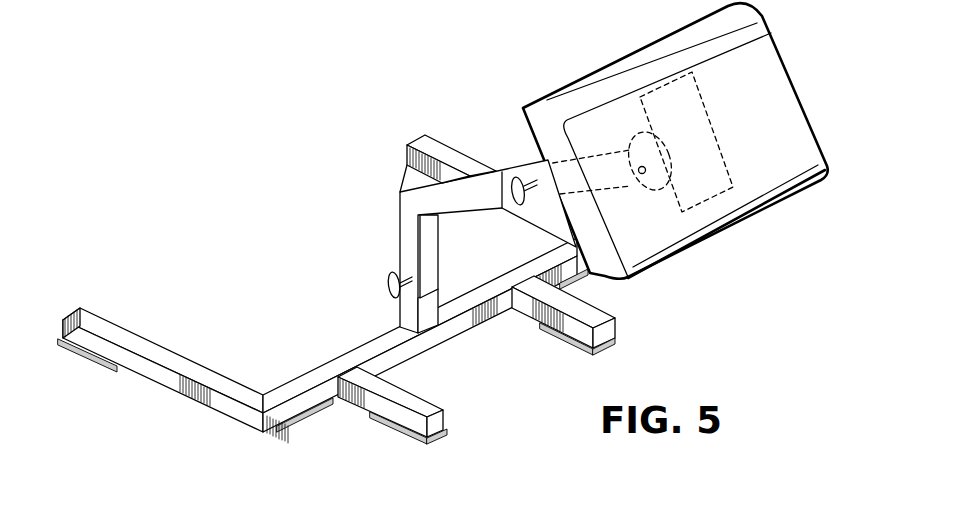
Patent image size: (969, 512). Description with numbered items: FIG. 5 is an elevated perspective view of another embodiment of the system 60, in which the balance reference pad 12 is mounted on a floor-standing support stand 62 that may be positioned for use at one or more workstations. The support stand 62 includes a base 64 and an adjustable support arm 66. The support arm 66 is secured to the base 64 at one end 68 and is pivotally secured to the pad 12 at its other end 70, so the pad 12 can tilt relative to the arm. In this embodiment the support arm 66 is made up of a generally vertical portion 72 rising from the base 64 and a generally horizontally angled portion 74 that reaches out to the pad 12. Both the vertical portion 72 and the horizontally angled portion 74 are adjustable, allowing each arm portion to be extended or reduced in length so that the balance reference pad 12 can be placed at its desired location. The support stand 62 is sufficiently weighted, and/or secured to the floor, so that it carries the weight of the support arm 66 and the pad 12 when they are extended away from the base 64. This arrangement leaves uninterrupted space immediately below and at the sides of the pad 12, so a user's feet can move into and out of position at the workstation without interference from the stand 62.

The balance reference pad 12 is at (700, 141).
The system 60 is at (446, 186).
The support stand 62 is at (400, 246).
The base 64 is at (305, 378).
The support arm 66 is at (513, 177).
The end 68 is at (446, 316).
The end 70 is at (622, 135).
The vertical portion 72 is at (430, 257).
The horizontally angled portion 74 is at (470, 198).